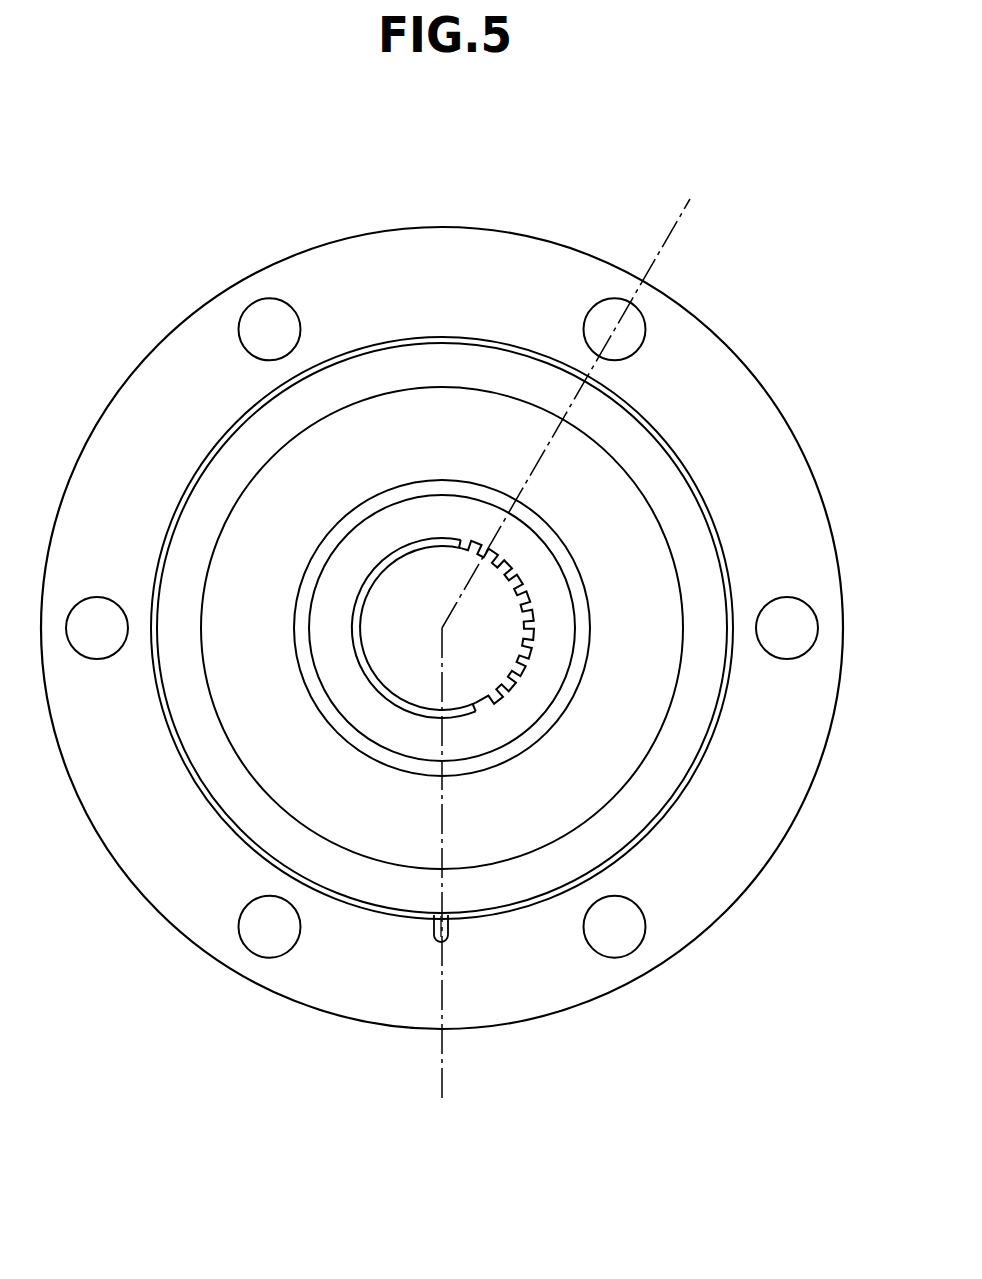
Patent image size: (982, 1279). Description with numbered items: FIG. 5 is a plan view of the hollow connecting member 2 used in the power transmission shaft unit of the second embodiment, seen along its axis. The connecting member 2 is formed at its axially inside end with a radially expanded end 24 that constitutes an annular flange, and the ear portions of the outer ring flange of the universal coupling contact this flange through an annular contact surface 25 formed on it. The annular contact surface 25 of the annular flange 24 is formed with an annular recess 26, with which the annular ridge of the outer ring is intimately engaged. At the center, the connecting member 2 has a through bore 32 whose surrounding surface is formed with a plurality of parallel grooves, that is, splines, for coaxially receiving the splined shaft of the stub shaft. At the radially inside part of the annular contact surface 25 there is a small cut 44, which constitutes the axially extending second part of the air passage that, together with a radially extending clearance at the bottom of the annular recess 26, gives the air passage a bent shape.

The hollow connecting member 2 is at (442, 645).
The radially expanded end 24 is at (693, 947).
The annular contact surface 25 is at (536, 270).
The annular recess 26 is at (658, 426).
The through bore 32 is at (517, 590).
The small cut 44 is at (445, 942).